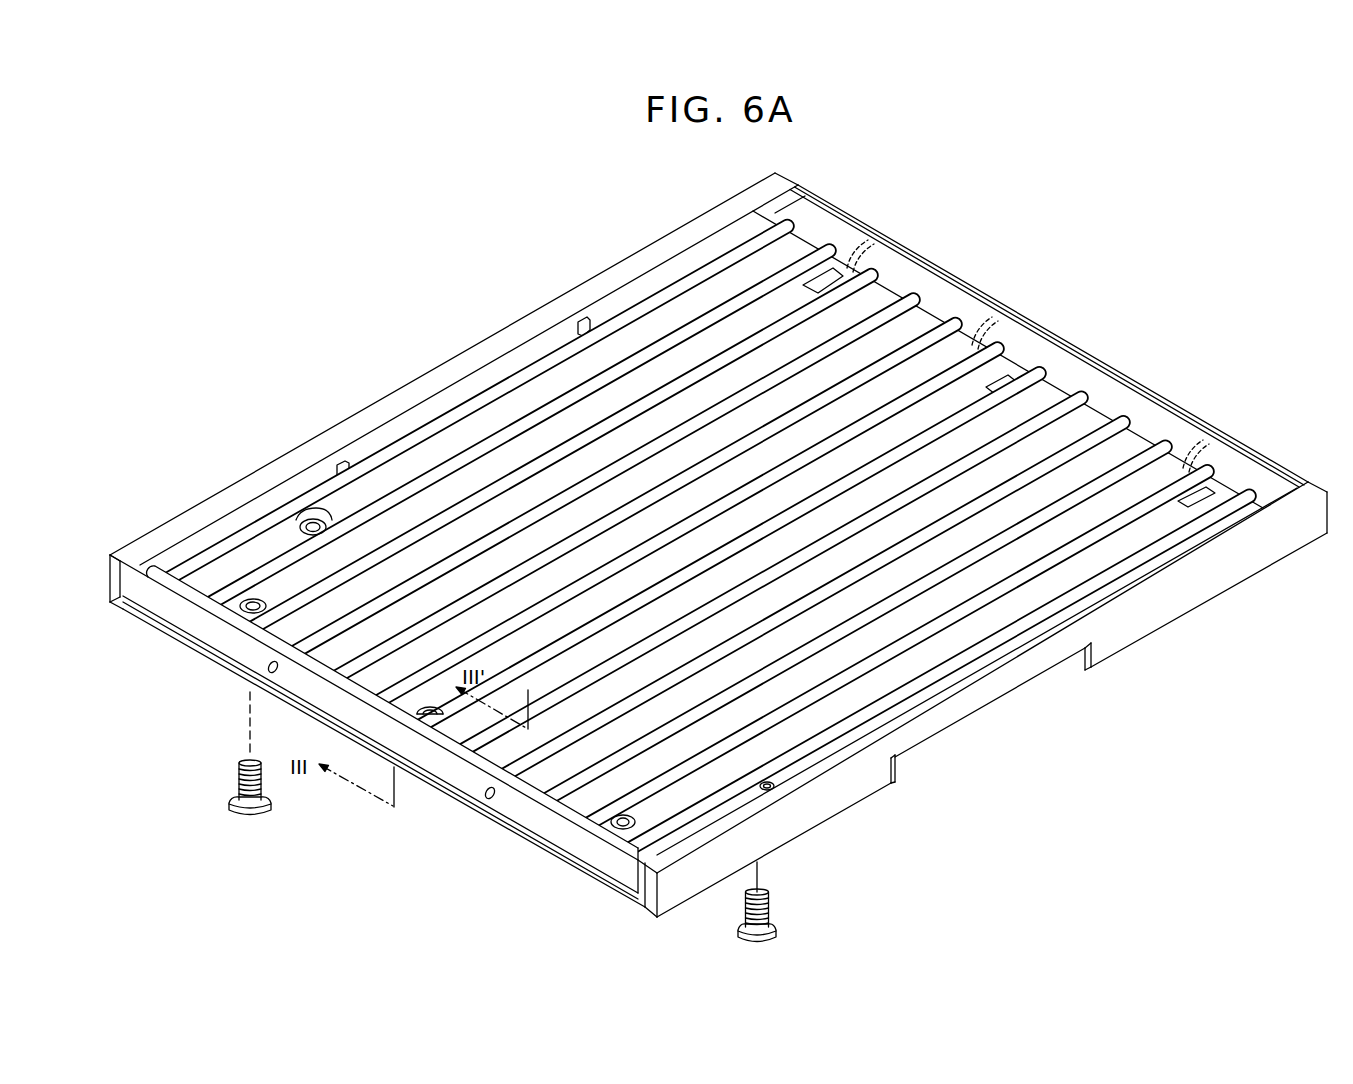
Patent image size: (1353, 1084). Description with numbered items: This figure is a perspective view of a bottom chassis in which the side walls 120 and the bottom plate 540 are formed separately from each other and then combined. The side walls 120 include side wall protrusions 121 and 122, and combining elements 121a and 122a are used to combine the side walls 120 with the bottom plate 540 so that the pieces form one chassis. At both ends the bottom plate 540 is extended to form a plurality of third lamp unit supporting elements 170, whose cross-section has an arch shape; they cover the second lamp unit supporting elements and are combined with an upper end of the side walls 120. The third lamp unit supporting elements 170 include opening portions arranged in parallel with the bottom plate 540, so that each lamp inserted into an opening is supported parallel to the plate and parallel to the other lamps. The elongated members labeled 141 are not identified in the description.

The side walls 120 is at (598, 285).
The side wall protrusion 121 is at (245, 612).
The combining element 121a is at (168, 634).
The side wall protrusion 122 is at (298, 524).
The combining element 122a is at (770, 905).
The rod 141 is at (492, 433).
The third lamp unit supporting element 170 is at (938, 296).
The bottom plate 540 is at (1020, 410).